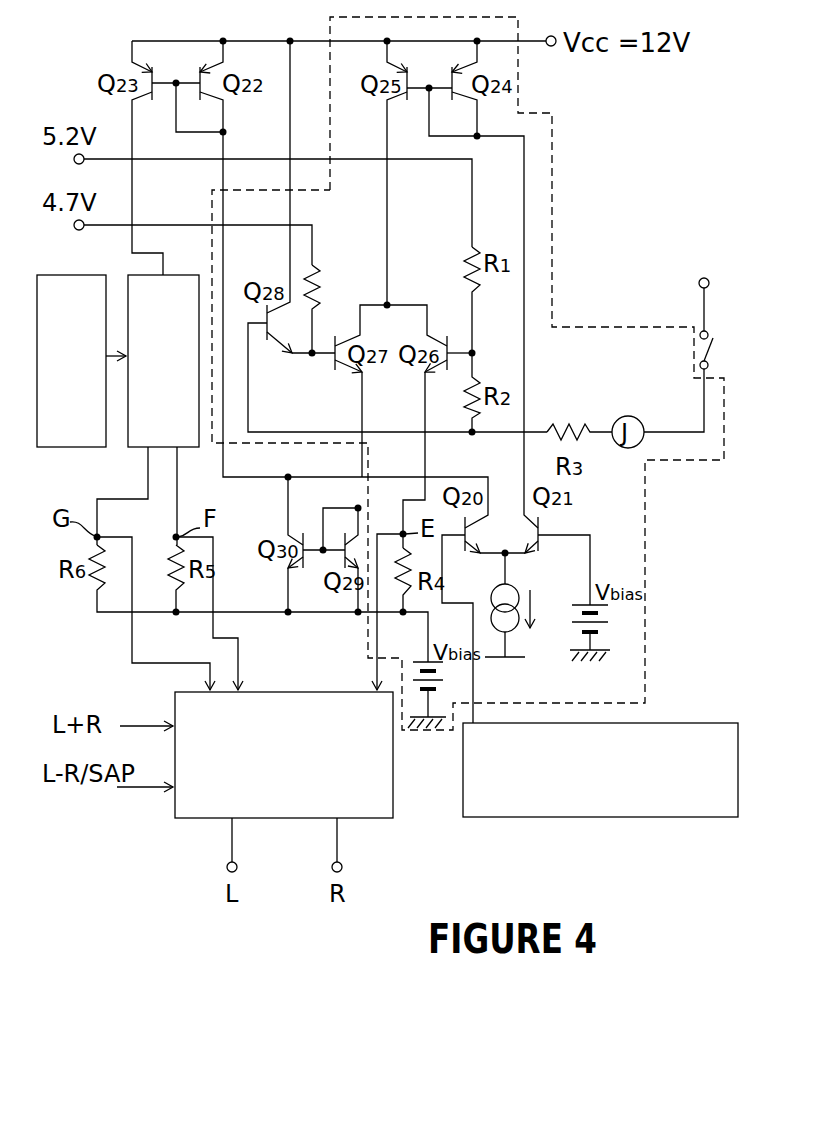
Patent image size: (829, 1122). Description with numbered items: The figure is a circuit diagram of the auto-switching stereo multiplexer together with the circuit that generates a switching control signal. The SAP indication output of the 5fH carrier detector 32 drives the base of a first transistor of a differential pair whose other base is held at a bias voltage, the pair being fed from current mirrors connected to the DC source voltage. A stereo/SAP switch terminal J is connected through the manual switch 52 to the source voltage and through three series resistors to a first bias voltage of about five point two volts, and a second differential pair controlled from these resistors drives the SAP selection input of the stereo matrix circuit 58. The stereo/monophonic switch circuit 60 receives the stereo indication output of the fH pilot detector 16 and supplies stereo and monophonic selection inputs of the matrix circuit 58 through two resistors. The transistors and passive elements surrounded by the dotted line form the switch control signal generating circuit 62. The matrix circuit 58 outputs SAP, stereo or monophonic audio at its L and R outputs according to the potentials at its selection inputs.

The fH pilot detector 16 is at (72, 448).
The 5fH carrier detector 32 is at (688, 723).
The manual switch 52 is at (708, 346).
The stereo matrix circuit 58 is at (368, 820).
The stereo/monophonic switch circuit 60 is at (143, 275).
The switch control signal generating circuit 62 is at (552, 170).